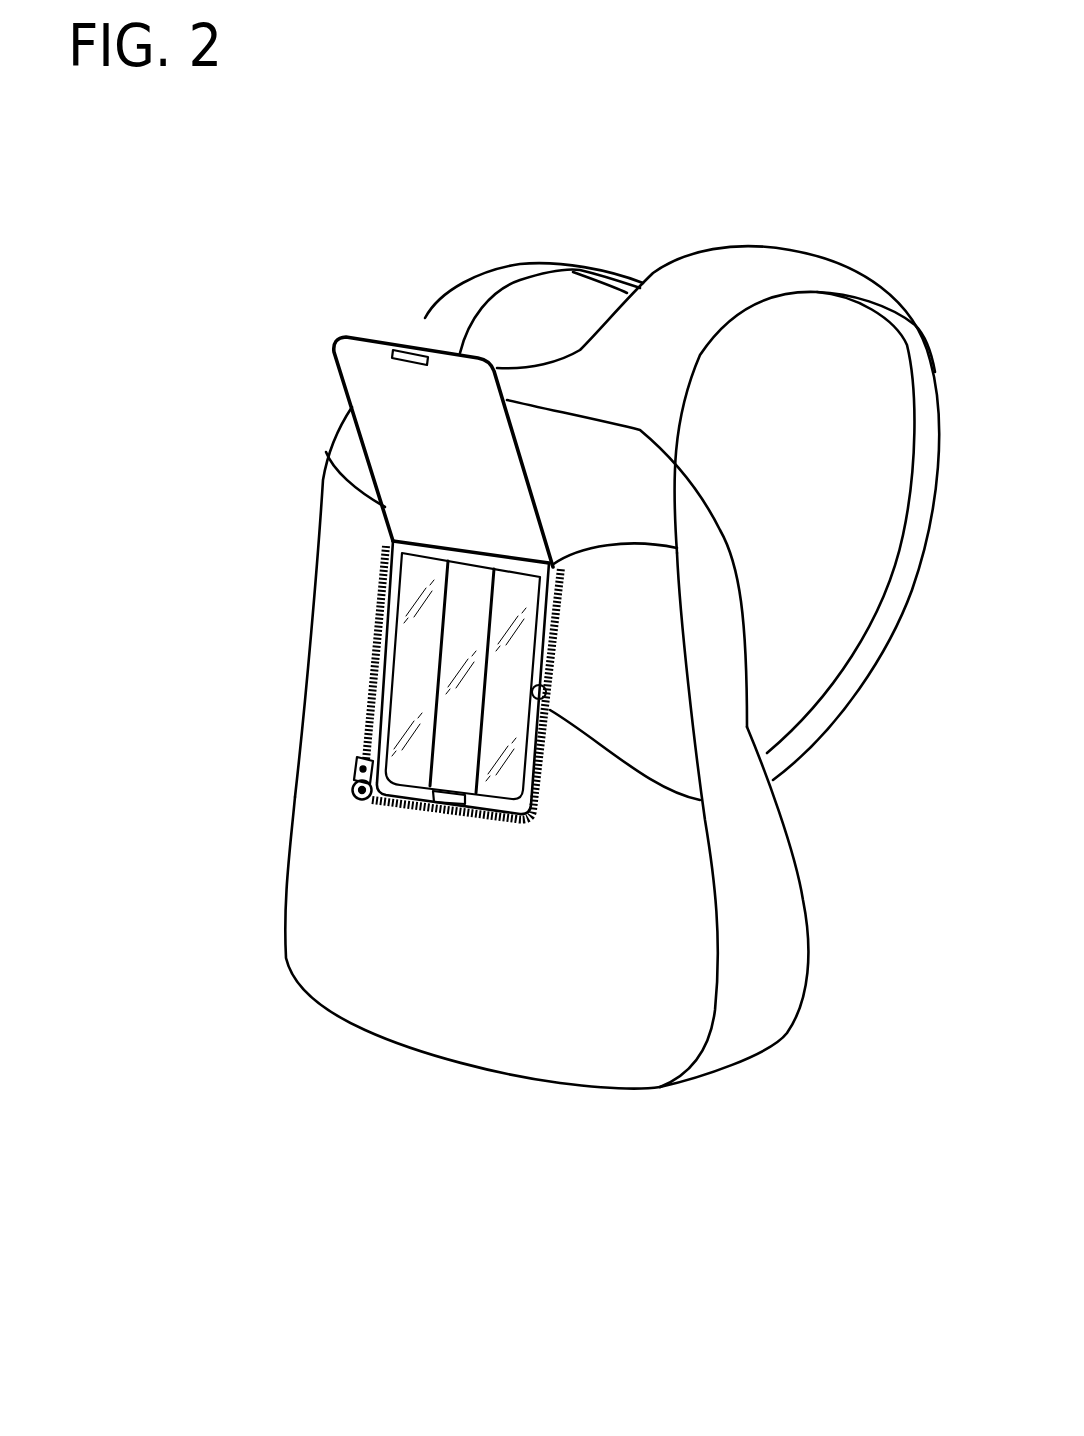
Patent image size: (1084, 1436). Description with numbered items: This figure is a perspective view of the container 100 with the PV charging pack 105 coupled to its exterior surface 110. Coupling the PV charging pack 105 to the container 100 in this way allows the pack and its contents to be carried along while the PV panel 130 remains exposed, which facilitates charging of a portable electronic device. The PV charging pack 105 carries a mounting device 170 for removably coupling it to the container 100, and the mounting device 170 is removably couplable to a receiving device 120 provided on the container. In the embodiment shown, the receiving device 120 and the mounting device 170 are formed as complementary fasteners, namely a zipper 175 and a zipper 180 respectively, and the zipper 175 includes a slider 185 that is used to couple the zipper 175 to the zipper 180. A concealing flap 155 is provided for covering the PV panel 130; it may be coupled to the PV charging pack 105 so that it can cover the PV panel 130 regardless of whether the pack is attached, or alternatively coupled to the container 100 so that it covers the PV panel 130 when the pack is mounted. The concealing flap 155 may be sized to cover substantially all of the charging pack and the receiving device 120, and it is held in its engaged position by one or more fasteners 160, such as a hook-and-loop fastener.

The container 100 is at (544, 758).
The PV charging pack 105 is at (506, 688).
The exterior surface 110 is at (650, 1058).
The receiving device 120 is at (700, 800).
The PV panel 130 is at (522, 596).
The concealing flap 155 is at (340, 362).
The fastener 160 is at (412, 356).
The mounting device 170 is at (540, 688).
The zipper 175 is at (385, 557).
The zipper 180 is at (392, 542).
The slider 185 is at (356, 782).